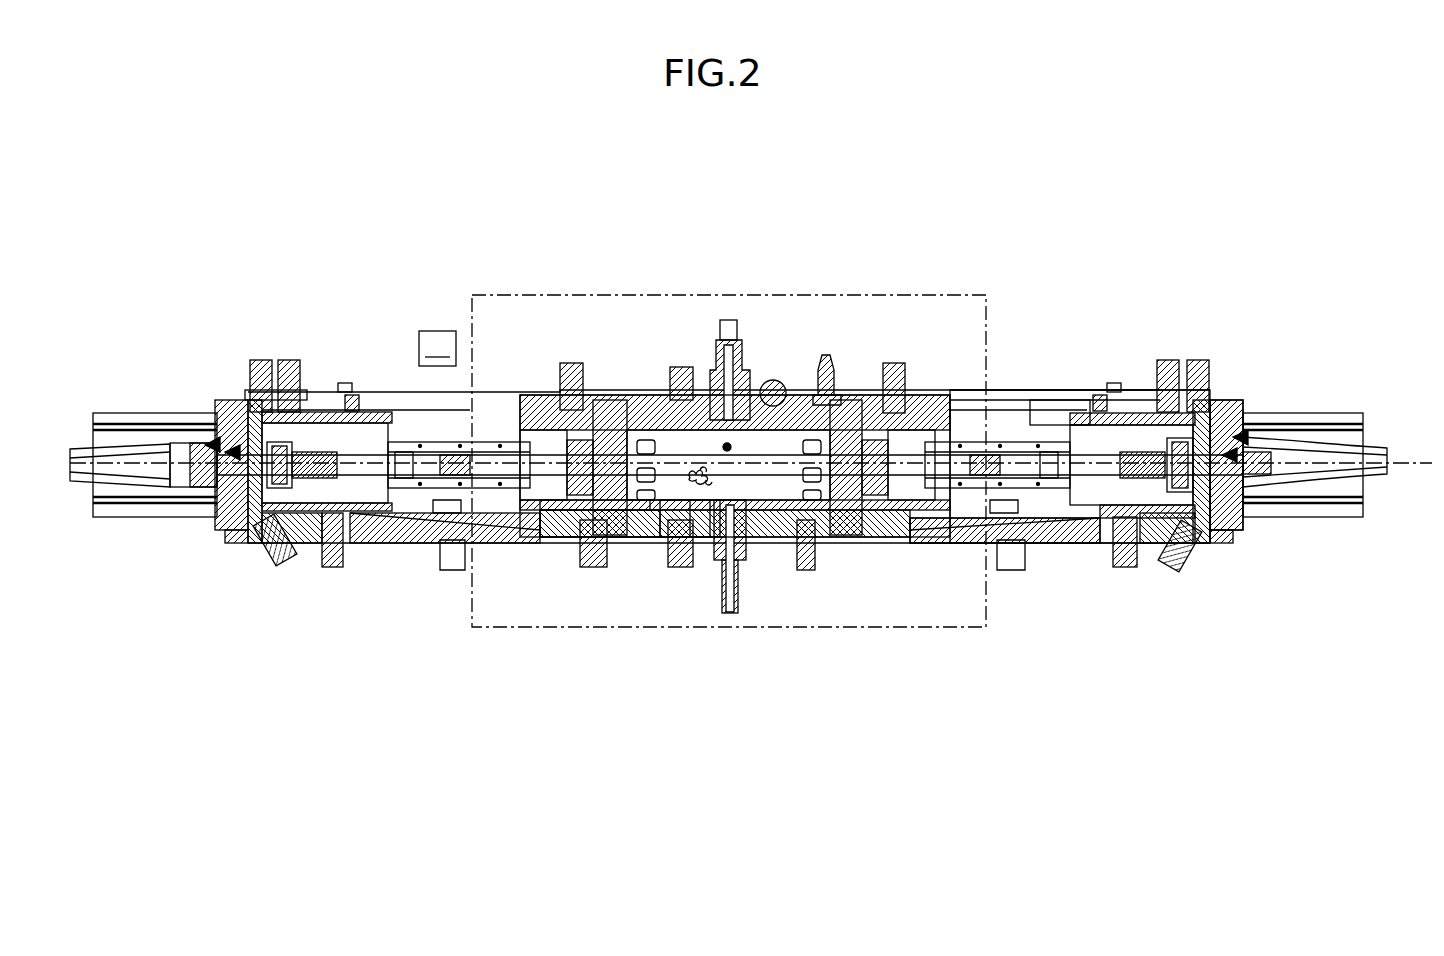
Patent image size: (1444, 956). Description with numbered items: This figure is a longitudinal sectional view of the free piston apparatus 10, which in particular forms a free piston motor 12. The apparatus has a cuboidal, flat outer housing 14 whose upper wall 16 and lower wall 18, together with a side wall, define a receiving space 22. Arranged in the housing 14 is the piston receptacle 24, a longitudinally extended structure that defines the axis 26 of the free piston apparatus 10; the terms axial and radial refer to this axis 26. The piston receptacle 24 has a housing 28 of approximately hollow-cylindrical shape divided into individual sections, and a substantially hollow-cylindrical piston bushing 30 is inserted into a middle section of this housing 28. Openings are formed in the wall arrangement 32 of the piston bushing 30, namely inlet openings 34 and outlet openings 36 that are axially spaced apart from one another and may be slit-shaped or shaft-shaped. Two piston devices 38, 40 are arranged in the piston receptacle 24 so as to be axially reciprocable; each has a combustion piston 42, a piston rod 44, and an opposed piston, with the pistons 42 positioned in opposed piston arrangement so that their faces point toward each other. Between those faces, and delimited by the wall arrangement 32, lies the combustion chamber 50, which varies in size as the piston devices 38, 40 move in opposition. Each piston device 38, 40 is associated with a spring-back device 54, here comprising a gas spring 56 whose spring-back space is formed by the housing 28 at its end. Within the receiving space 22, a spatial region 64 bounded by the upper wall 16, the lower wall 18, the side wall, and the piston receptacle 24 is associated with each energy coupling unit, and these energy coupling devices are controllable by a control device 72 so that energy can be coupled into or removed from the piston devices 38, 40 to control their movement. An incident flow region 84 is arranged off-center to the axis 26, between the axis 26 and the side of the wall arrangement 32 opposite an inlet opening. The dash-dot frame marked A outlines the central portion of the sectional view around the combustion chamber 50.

The free piston apparatus 10 is at (942, 178).
The free piston motor 12 is at (815, 268).
The outer housing 14 is at (1037, 388).
The upper wall 16 is at (1007, 390).
The lower wall 18 is at (1080, 530).
The receiving space 22 is at (1043, 423).
The piston receptacle 24 is at (647, 537).
The axis 26 is at (1410, 472).
The housing 28 is at (655, 545).
The piston bushing 30 is at (690, 535).
The wall arrangement 32 is at (700, 530).
The inlet openings 34 is at (643, 450).
The outlet openings 36 is at (813, 447).
The piston device 38 is at (540, 450).
The piston device 40 is at (910, 443).
The piston 42 is at (603, 447).
The piston rod 44 is at (413, 447).
The combustion chamber 50 is at (752, 452).
The spring-back device 54 is at (212, 443).
The gas spring 56 is at (233, 440).
The spatial region 64 is at (483, 427).
The control device 72 is at (438, 346).
The incident flow region 84 is at (692, 463).
The section A is at (960, 295).